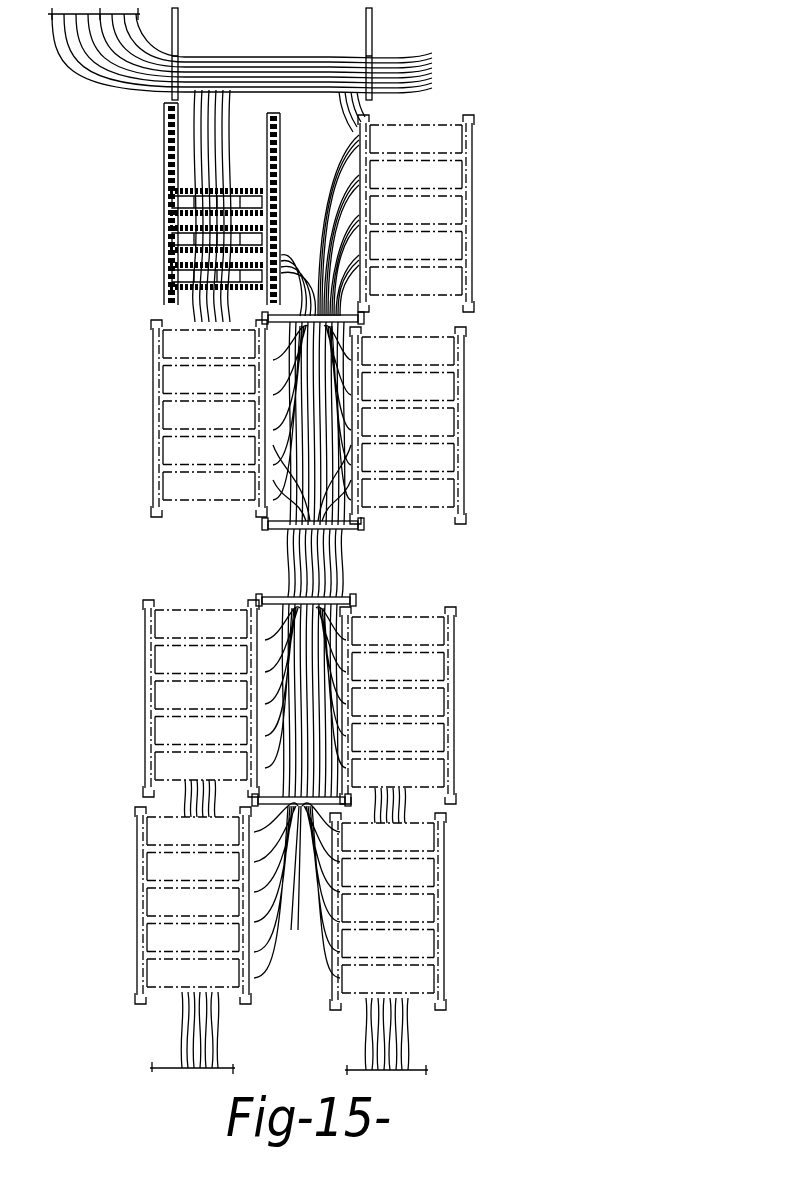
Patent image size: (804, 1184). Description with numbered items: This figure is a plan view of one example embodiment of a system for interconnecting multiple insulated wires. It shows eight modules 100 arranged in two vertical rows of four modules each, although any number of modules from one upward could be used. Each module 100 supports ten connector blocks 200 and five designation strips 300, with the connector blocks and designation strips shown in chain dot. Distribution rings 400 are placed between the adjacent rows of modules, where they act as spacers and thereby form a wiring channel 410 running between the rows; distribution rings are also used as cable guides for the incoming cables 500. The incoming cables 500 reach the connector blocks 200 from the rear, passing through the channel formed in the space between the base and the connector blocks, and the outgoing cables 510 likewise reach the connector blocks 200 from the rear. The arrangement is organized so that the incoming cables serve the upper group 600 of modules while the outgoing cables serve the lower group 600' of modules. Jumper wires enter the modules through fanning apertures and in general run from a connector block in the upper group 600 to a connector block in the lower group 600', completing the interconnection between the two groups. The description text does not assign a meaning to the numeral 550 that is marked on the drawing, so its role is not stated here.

The module 100 is at (152, 305).
The connector block 200 is at (176, 201).
The designation strip 300 is at (176, 229).
The distribution ring 400 is at (378, 55).
The wiring channel 410 is at (309, 167).
The incoming cable 500 is at (257, 55).
The outgoing cable 510 is at (186, 1018).
The cable 550 is at (272, 507).
The upper group of modules 600 is at (573, 356).
The lower group of modules 600' is at (567, 821).